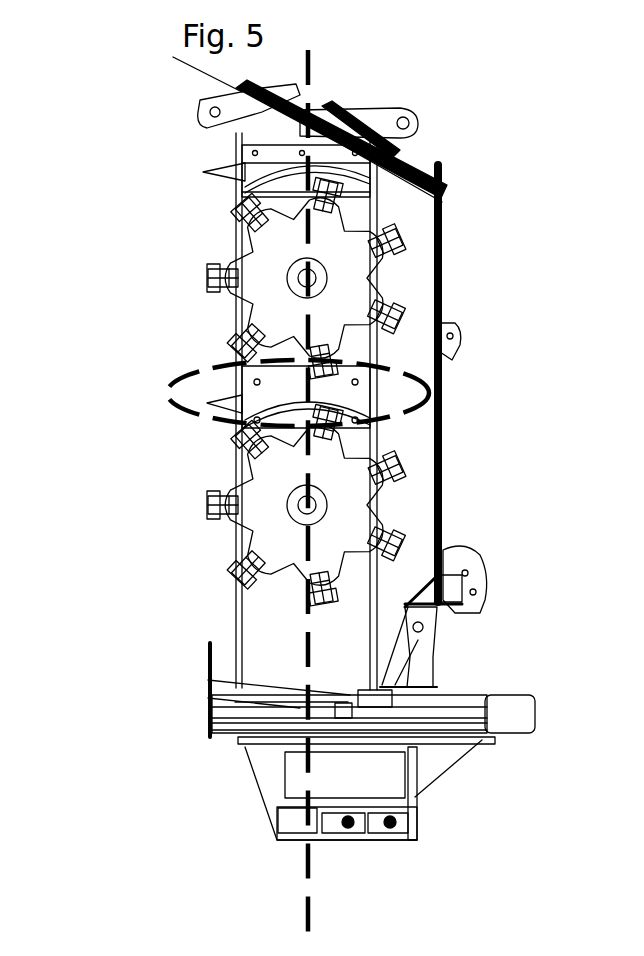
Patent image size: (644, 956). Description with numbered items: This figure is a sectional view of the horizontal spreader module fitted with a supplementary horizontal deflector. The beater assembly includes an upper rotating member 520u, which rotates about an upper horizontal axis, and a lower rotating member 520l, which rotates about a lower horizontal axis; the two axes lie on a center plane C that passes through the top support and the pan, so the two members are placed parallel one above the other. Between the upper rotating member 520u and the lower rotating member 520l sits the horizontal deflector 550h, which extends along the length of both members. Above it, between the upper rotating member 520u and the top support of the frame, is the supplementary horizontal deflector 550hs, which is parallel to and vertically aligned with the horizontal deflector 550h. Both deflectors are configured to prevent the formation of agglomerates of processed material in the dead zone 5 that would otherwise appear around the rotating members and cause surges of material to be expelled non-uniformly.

The upper rotating member 520u is at (405, 268).
The lower rotating member 520l is at (403, 498).
The supplementary horizontal deflector 550hs is at (190, 207).
The horizontal deflector 550h is at (192, 440).
The dead zone 5 is at (167, 385).
The center plane C is at (307, 863).